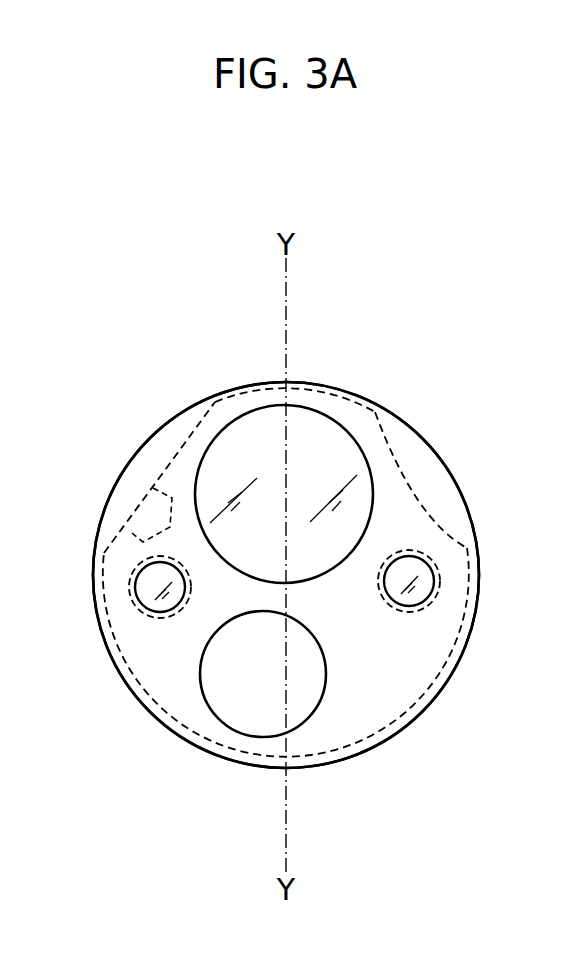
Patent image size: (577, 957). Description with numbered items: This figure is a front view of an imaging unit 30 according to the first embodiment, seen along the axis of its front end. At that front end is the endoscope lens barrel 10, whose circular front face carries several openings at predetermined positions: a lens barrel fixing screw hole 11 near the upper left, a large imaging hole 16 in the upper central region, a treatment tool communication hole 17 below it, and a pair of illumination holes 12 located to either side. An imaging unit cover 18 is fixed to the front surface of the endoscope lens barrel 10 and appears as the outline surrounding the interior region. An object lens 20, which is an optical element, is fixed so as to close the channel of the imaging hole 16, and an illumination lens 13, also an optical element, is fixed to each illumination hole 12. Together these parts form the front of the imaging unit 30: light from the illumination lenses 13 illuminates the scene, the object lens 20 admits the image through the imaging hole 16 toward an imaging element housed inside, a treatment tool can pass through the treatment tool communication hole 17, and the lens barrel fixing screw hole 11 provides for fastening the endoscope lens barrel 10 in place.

The endoscope lens barrel 10 is at (408, 735).
The imaging unit 30 is at (408, 375).
The object lens 20 is at (238, 472).
The imaging unit cover 18 is at (395, 513).
The lens barrel fixing screw hole 11 is at (148, 513).
The imaging hole 16 is at (253, 438).
The treatment tool communication hole 17 is at (238, 688).
The illumination hole 12 is at (152, 592).
The illumination lens 13 is at (153, 575).